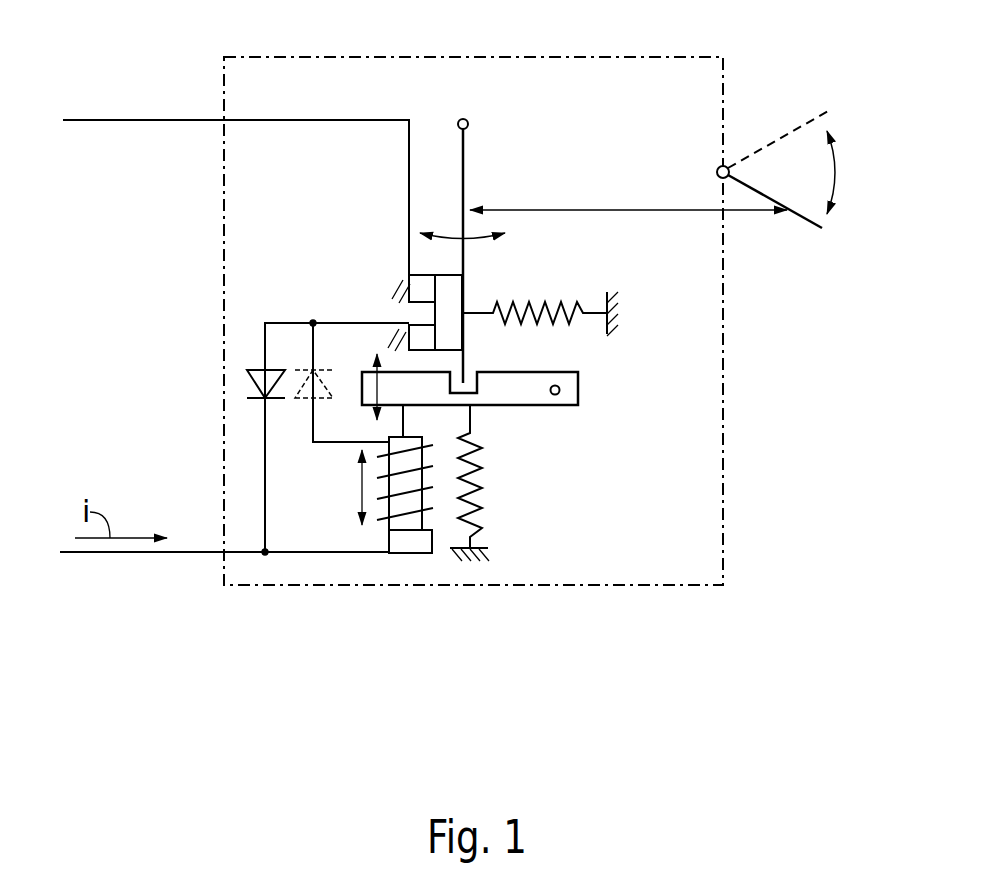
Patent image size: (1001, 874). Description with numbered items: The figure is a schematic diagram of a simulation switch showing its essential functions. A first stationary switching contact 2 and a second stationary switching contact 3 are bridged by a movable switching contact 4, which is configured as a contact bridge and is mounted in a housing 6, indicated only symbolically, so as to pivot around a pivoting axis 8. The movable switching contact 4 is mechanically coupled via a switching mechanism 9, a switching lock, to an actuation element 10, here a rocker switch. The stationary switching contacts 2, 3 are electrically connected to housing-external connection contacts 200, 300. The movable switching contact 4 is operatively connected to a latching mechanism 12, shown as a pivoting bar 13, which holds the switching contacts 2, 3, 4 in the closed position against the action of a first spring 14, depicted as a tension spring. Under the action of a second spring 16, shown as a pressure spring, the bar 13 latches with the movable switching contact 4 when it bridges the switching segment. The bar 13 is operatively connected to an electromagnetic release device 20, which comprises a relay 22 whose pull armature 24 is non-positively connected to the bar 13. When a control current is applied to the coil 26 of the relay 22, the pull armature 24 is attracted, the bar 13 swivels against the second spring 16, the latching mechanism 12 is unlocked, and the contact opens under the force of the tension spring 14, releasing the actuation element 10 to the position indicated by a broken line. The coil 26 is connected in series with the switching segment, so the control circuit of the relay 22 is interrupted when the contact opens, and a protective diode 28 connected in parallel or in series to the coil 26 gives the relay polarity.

The first stationary switching contact 2 is at (425, 333).
The second stationary switching contact 3 is at (420, 287).
The movable switching contact 4 is at (464, 260).
The housing 6 is at (509, 57).
The pivoting axis 8 is at (469, 119).
The switching mechanism 9 is at (627, 165).
The actuation element 10 is at (812, 232).
The latching mechanism 12 is at (528, 415).
The pivoting bar 13 is at (525, 387).
The first spring 14 is at (563, 310).
The second spring 16 is at (477, 468).
The electromagnetic release device 20 is at (401, 504).
The relay 22 is at (328, 518).
The pull armature 24 is at (392, 522).
The coil 26 is at (427, 507).
The protective diode 28 is at (257, 388).
The connection contact 200 is at (112, 553).
The connection contact 300 is at (105, 120).